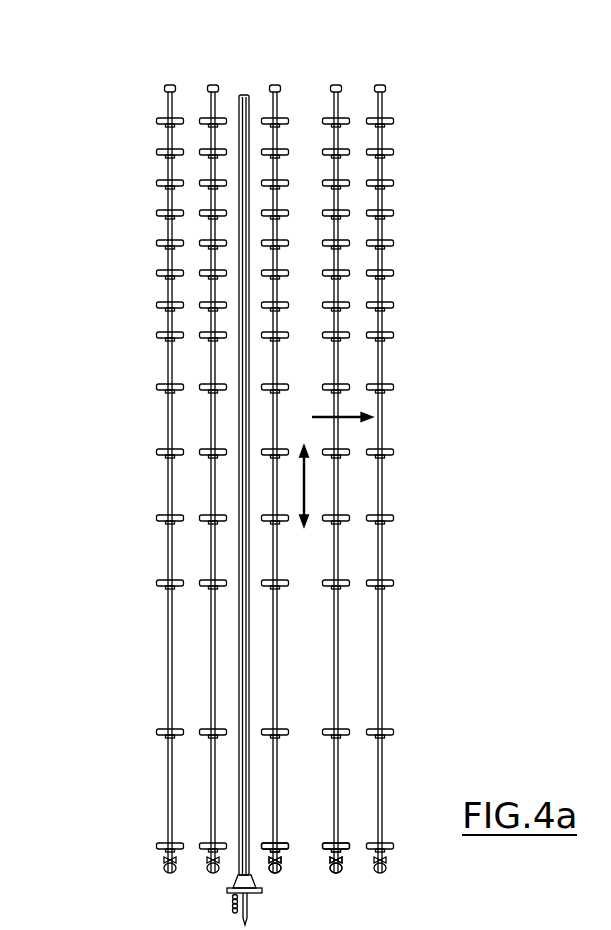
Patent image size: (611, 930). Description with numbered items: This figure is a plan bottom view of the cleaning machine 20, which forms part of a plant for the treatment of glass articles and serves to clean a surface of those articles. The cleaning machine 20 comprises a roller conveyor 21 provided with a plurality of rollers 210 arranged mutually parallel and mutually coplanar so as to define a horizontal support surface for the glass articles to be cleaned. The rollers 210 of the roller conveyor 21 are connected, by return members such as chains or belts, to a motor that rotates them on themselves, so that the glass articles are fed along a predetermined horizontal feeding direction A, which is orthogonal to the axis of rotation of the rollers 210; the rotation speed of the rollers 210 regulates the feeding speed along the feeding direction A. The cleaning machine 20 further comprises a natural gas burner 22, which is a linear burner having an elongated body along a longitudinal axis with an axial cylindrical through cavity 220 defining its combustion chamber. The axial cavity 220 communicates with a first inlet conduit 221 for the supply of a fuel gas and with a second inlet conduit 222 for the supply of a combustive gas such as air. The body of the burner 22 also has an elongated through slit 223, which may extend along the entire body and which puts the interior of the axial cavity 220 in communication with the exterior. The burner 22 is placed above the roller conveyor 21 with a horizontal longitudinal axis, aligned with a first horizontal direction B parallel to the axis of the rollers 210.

The cleaning machine 20 is at (310, 473).
The roller conveyor 21 is at (168, 633).
The rollers 210 is at (342, 851).
The natural gas burner 22 is at (237, 473).
The axial cylindrical cavity 220 is at (250, 103).
The elongated through slit 223 is at (248, 195).
The first inlet conduit 221 is at (232, 899).
The second inlet conduit 222 is at (228, 907).
The feeding direction A is at (343, 412).
The first horizontal direction B is at (308, 480).